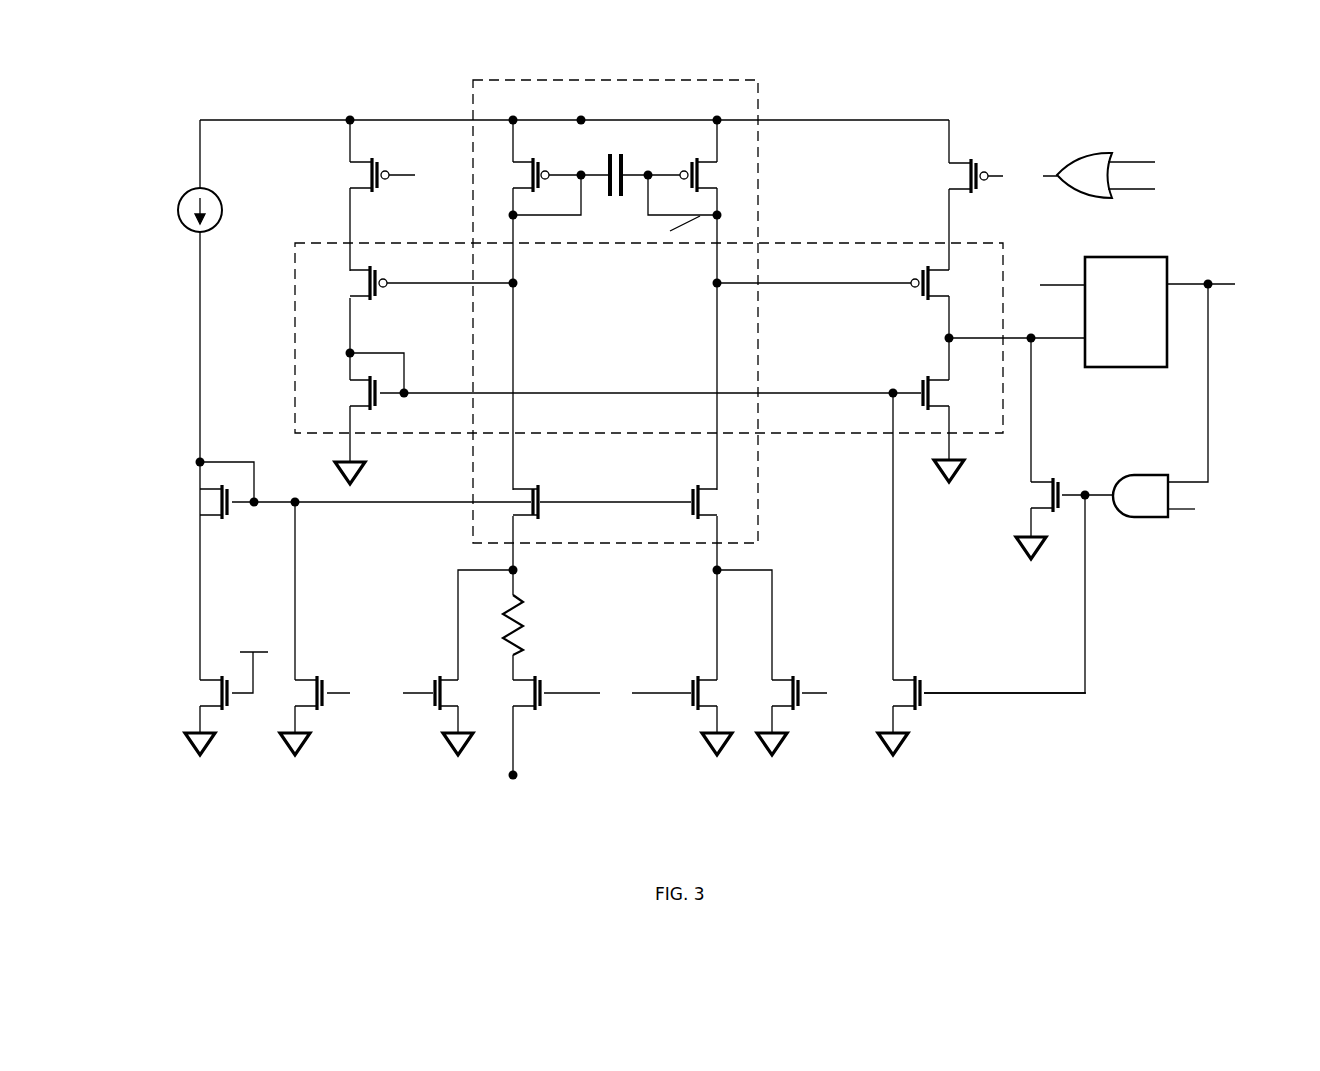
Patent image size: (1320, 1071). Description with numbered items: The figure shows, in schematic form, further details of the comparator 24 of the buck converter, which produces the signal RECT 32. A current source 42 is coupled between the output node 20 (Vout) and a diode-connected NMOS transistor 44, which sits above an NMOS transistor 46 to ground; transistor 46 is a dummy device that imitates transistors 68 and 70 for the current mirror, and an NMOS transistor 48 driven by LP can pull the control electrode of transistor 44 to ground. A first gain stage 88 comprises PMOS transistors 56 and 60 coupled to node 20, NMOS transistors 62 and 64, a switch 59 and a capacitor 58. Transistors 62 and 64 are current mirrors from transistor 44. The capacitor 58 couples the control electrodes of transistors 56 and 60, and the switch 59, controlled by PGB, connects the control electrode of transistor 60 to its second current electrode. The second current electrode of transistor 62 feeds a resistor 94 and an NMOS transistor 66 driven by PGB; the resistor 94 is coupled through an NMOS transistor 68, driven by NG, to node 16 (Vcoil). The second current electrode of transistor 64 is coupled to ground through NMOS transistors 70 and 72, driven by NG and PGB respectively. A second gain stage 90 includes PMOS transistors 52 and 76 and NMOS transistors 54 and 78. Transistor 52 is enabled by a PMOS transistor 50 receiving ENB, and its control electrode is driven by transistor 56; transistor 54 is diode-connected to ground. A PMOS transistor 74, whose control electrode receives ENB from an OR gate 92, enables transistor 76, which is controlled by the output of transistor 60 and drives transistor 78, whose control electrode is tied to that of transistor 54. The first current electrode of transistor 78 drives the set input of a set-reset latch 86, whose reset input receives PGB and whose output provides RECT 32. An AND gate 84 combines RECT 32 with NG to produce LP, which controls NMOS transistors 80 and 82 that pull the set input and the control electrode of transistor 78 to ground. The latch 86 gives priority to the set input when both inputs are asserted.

The circuit node 16 is at (516, 770).
The circuit node 20 is at (581, 120).
The comparator 24 is at (732, 829).
The RECT 32 is at (1239, 378).
The current source 42 is at (180, 210).
The NMOS transistor 44 is at (226, 519).
The NMOS transistor 46 is at (228, 710).
The NMOS transistor 48 is at (322, 710).
The PMOS transistor 50 is at (374, 192).
The PMOS transistor 52 is at (374, 300).
The NMOS transistor 54 is at (378, 410).
The PMOS transistor 56 is at (534, 160).
The capacitor 58 is at (610, 198).
The switch 59 is at (683, 233).
The PMOS transistor 60 is at (692, 160).
The NMOS transistor 62 is at (538, 483).
The NMOS transistor 64 is at (687, 483).
The NMOS transistor 66 is at (435, 710).
The NMOS transistor 68 is at (538, 675).
The NMOS transistor 70 is at (689, 675).
The NMOS transistor 72 is at (800, 710).
The PMOS transistor 74 is at (972, 156).
The PMOS transistor 76 is at (924, 300).
The NMOS transistor 78 is at (923, 378).
The NMOS transistor 80 is at (1052, 478).
The NMOS transistor 82 is at (919, 677).
The AND gate 84 is at (1145, 475).
The set-reset latch 86 is at (1127, 368).
The first gain stage 88 is at (758, 160).
The second gain stage 90 is at (832, 243).
The OR gate 92 is at (1090, 151).
The resistor 94 is at (523, 606).